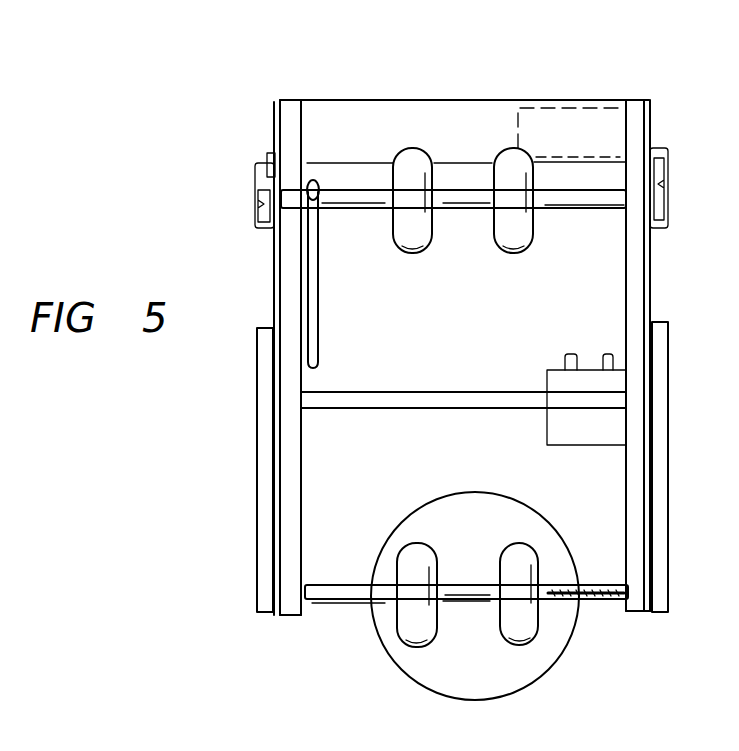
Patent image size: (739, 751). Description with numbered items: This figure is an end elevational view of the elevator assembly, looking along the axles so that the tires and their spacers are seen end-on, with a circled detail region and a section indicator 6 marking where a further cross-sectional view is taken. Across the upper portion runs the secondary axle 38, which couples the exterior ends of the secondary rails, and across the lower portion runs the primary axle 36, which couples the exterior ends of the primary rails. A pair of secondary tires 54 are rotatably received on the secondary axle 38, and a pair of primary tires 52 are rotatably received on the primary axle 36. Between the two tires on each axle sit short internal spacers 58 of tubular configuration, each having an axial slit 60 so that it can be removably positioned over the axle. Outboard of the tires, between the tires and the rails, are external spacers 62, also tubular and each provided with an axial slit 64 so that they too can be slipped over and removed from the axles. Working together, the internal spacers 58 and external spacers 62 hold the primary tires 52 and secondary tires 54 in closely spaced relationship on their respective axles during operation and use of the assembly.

The section line for FIG. 6 is at (568, 632).
The primary axle 36 is at (603, 583).
The secondary axle 38 is at (580, 192).
The primary tires 52 is at (398, 635).
The secondary tires 54 is at (413, 155).
The internal spacers 58 is at (462, 585).
The axial slit 60 is at (465, 600).
The external spacers 62 is at (322, 192).
The axial slit 64 is at (358, 192).